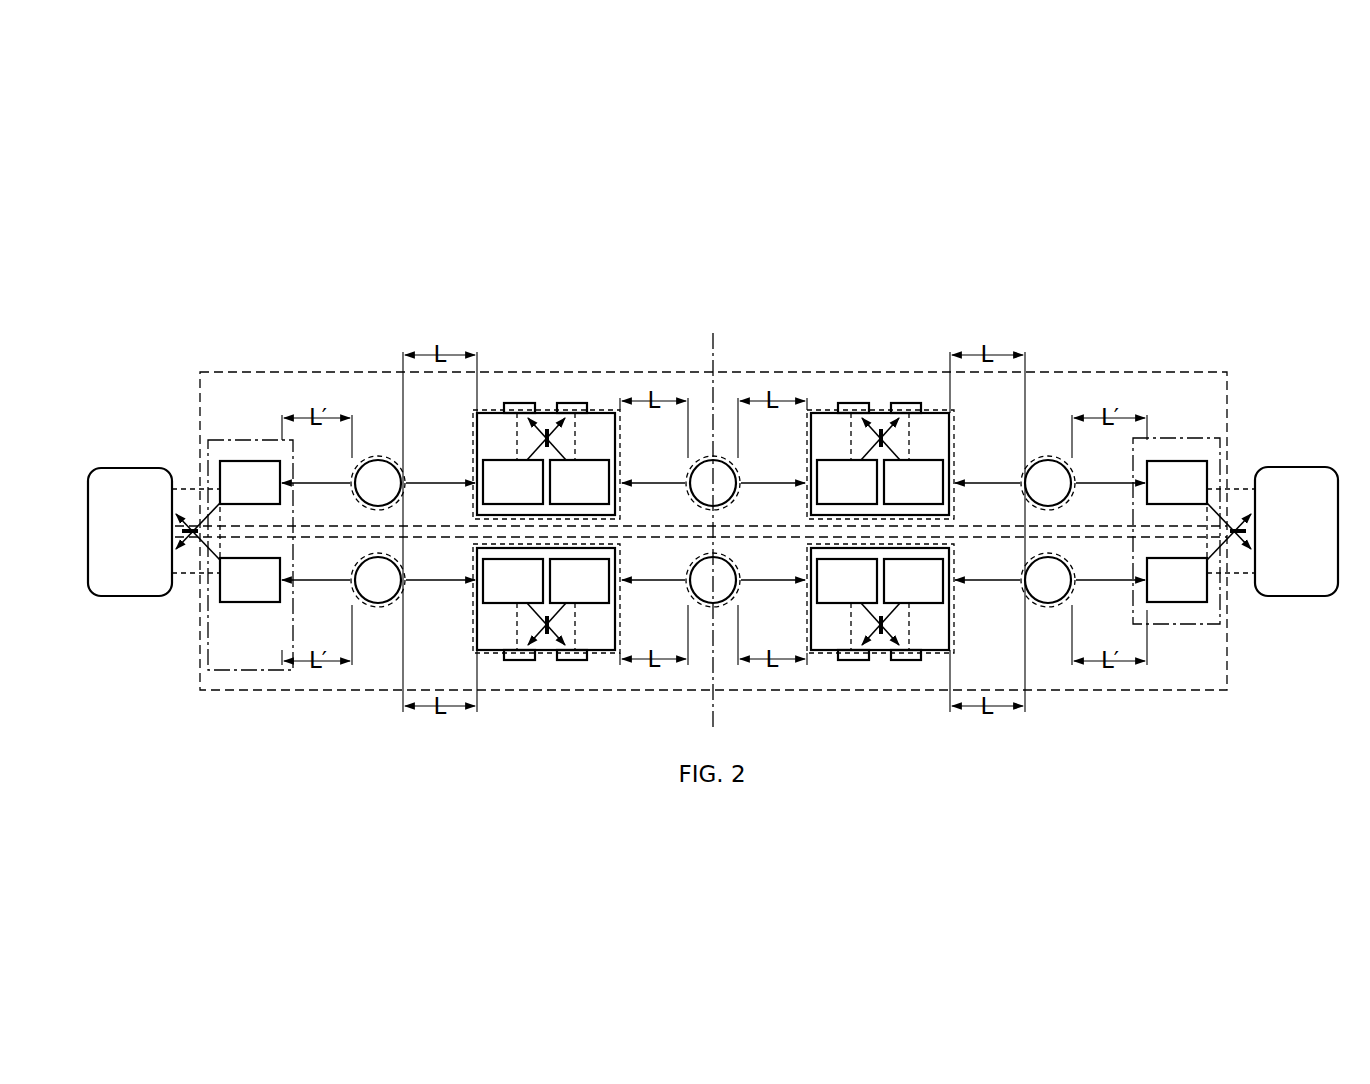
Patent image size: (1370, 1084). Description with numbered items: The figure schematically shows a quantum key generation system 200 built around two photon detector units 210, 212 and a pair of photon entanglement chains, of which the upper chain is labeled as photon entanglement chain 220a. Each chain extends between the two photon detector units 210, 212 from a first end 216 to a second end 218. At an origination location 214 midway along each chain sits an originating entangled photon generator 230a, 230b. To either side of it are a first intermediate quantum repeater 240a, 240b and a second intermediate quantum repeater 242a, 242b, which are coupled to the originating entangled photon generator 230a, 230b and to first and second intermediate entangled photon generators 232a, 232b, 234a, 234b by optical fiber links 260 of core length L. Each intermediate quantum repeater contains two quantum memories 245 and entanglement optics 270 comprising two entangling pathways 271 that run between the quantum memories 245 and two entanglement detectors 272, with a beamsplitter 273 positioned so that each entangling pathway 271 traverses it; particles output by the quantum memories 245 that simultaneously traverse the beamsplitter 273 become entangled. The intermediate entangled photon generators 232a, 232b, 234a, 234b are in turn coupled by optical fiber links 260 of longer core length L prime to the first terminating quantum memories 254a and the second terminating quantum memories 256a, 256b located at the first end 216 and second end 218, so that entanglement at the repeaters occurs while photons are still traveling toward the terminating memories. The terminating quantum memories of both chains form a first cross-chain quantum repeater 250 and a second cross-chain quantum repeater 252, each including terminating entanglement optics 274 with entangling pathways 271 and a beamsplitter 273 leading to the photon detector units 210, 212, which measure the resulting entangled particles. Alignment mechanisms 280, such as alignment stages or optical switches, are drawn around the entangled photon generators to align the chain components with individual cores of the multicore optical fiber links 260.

The quantum key generation system 200 is at (1108, 282).
The origination location 214 is at (711, 335).
The first end 216 is at (130, 410).
The second end 218 is at (1295, 410).
The photon detector unit 210 is at (106, 468).
The photon detector unit 212 is at (1320, 467).
The photon entanglement chain 220a is at (233, 372).
The first cross-chain quantum repeater 250 is at (206, 452).
The second cross-chain quantum repeater 252 is at (1221, 452).
The first terminating quantum memory 254a is at (254, 460).
The second terminating quantum memory 256a is at (1175, 460).
The second terminating quantum memory 256b is at (1175, 603).
The first intermediate entangled photon generator 232a is at (376, 456).
The first intermediate entangled photon generator 232b is at (376, 607).
The originating entangled photon generator 230a is at (688, 488).
The originating entangled photon generator 230b is at (688, 572).
The second intermediate entangled photon generator 234a is at (1046, 456).
The second intermediate entangled photon generator 234b is at (1046, 607).
The first intermediate quantum repeater 240a is at (615, 412).
The first intermediate quantum repeater 240b is at (615, 651).
The second intermediate quantum repeater 242a is at (812, 412).
The second intermediate quantum repeater 242b is at (812, 651).
The quantum memory 245 is at (713, 531).
The optical fiber link 260 is at (318, 481).
The entanglement optics 270 is at (515, 426).
The entangling pathway 271 is at (520, 440).
The entanglement detector 272 is at (517, 402).
The beamsplitter 273 is at (547, 427).
The terminating entanglement optics 274 is at (180, 583).
The alignment mechanism 280 is at (365, 495).